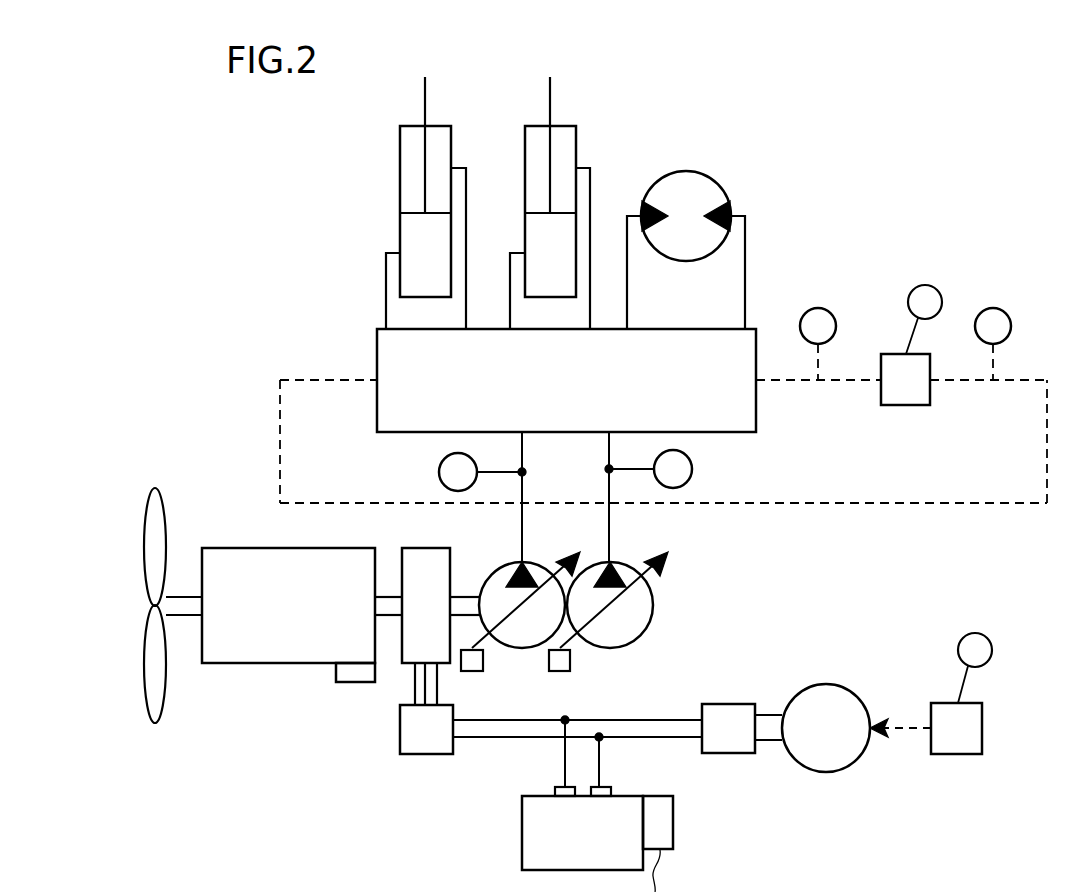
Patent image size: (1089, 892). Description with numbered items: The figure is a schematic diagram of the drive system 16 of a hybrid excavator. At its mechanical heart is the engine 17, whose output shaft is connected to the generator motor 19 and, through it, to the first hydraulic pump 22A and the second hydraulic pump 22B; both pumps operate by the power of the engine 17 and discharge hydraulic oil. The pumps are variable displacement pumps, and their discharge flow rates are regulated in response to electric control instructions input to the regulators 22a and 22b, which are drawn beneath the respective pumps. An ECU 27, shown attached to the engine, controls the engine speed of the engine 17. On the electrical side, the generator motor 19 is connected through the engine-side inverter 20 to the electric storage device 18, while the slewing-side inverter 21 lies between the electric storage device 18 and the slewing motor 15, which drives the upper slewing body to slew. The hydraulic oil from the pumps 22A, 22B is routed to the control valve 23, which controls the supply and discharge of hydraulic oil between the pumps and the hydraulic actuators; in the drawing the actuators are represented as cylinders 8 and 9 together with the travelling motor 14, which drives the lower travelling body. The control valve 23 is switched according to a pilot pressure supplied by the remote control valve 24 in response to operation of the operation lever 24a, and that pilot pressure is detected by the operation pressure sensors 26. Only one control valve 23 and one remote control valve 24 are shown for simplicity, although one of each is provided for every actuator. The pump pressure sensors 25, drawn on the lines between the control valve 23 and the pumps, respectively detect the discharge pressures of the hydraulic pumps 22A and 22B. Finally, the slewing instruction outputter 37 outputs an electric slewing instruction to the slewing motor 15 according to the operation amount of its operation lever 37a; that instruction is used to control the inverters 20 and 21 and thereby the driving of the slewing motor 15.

The hydraulic cylinder 8 is at (564, 126).
The hydraulic cylinder 9 is at (438, 126).
The travelling motor 14 is at (690, 171).
The slewing motor 15 is at (835, 684).
The drive system 16 is at (868, 159).
The engine 17 is at (242, 548).
The electric storage device 18 is at (522, 831).
The generator motor 19 is at (416, 548).
The engine-side inverter 20 is at (425, 754).
The slewing-side inverter 21 is at (730, 753).
The first hydraulic pump 22A is at (502, 565).
The second hydraulic pump 22B is at (593, 565).
The regulator 22a is at (470, 672).
The regulator 22b is at (563, 672).
The control valve 23 is at (756, 412).
The remote control valve 24 is at (908, 405).
The operation lever 24a is at (925, 285).
The pump pressure sensor 25 is at (439, 472).
The operation pressure sensor 26 is at (816, 308).
The ECU 27 is at (356, 682).
The slewing instruction outputter 37 is at (982, 717).
The operation lever 37a is at (984, 634).